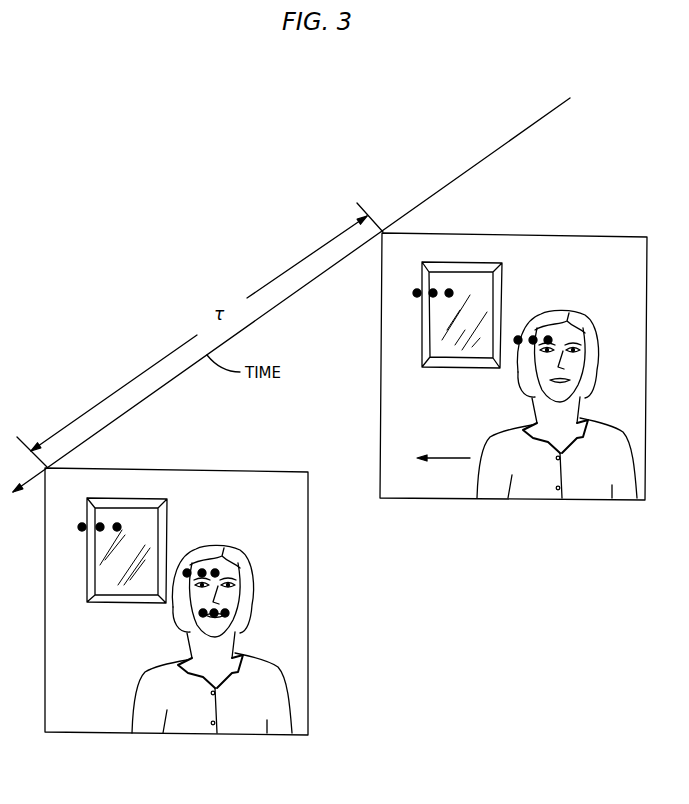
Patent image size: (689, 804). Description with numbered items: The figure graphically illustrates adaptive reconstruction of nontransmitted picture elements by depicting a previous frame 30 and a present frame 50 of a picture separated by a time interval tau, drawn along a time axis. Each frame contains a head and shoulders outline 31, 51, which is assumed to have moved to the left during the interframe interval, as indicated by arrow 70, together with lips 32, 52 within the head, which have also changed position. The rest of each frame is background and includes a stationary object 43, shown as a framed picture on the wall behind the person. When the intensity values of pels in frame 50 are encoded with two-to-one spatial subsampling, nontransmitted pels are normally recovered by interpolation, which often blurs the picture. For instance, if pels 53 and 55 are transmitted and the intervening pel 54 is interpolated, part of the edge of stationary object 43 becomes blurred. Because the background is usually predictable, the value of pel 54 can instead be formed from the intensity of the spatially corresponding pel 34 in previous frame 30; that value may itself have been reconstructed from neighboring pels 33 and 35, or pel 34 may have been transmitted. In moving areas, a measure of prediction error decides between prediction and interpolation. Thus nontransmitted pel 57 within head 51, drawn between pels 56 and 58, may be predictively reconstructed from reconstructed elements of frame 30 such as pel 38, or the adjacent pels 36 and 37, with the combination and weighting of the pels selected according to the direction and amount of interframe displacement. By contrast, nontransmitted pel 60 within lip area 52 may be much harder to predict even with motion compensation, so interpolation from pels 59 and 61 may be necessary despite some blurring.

The previous frame 30 is at (545, 233).
The head and shoulders outline 31 is at (596, 352).
The lips 32 is at (565, 382).
The pel 33 is at (417, 289).
The spatially corresponding pel 34 is at (433, 289).
The pel 35 is at (449, 289).
The pel 36 is at (518, 336).
The pel 37 is at (533, 336).
The pel 38 is at (548, 336).
The stationary object 43 is at (500, 282).
The present frame 50 is at (210, 470).
The head and shoulders outline 51 is at (248, 583).
The lips 52 is at (175, 610).
The transmitted pel 53 is at (82, 523).
The intervening pel 54 is at (100, 523).
The transmitted pel 55 is at (117, 523).
The pel 56 is at (187, 569).
The nontransmitted pel 57 is at (202, 569).
The pel 58 is at (215, 569).
The pel 59 is at (203, 613).
The nontransmitted pel 60 is at (203, 613).
The pel 61 is at (227, 613).
The arrow 70 is at (442, 458).